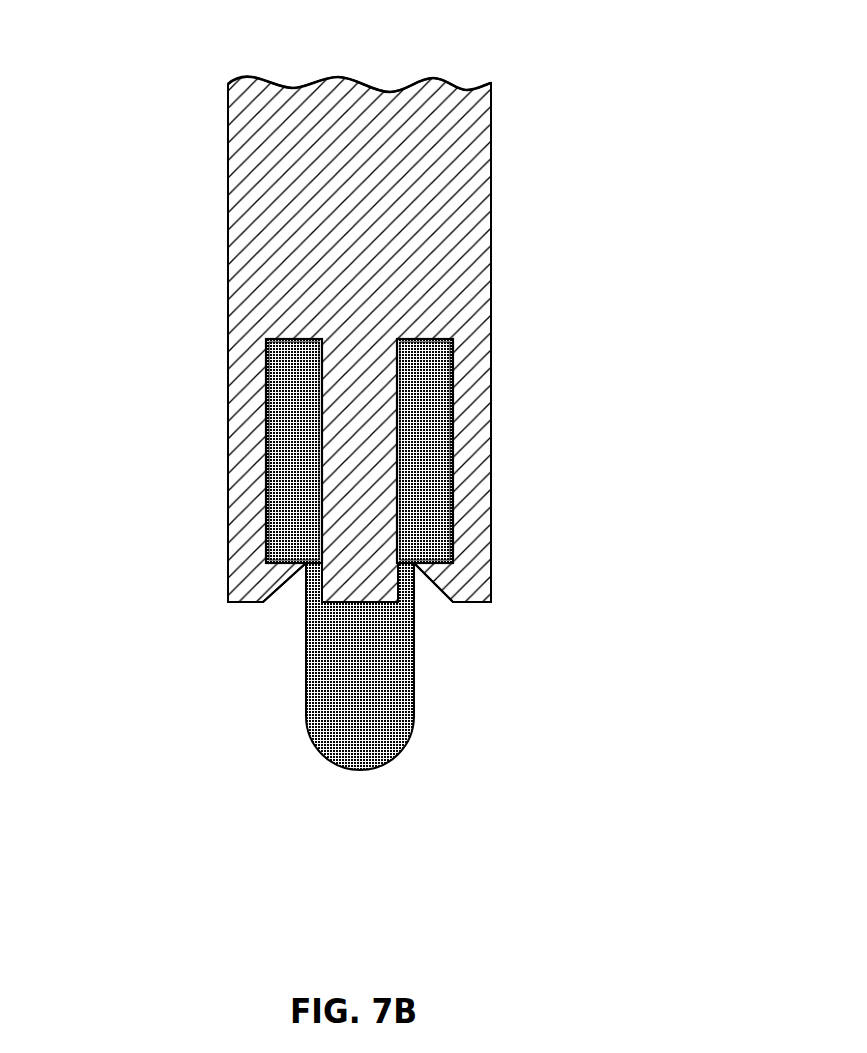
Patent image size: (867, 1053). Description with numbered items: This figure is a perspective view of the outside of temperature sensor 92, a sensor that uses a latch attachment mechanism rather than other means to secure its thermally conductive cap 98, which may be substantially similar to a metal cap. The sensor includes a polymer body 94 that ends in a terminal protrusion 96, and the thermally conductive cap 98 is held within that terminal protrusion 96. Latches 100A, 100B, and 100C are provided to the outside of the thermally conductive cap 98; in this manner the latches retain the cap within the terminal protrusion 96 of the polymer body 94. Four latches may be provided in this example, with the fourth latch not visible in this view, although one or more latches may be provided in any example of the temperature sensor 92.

The temperature sensor 92 is at (377, 411).
The polymer body 94 is at (486, 178).
The terminal protrusion 96 is at (337, 339).
The thermally conductive cap 98 is at (332, 757).
The latch 100A is at (227, 597).
The latch 100B is at (408, 603).
The latch 100C is at (498, 602).